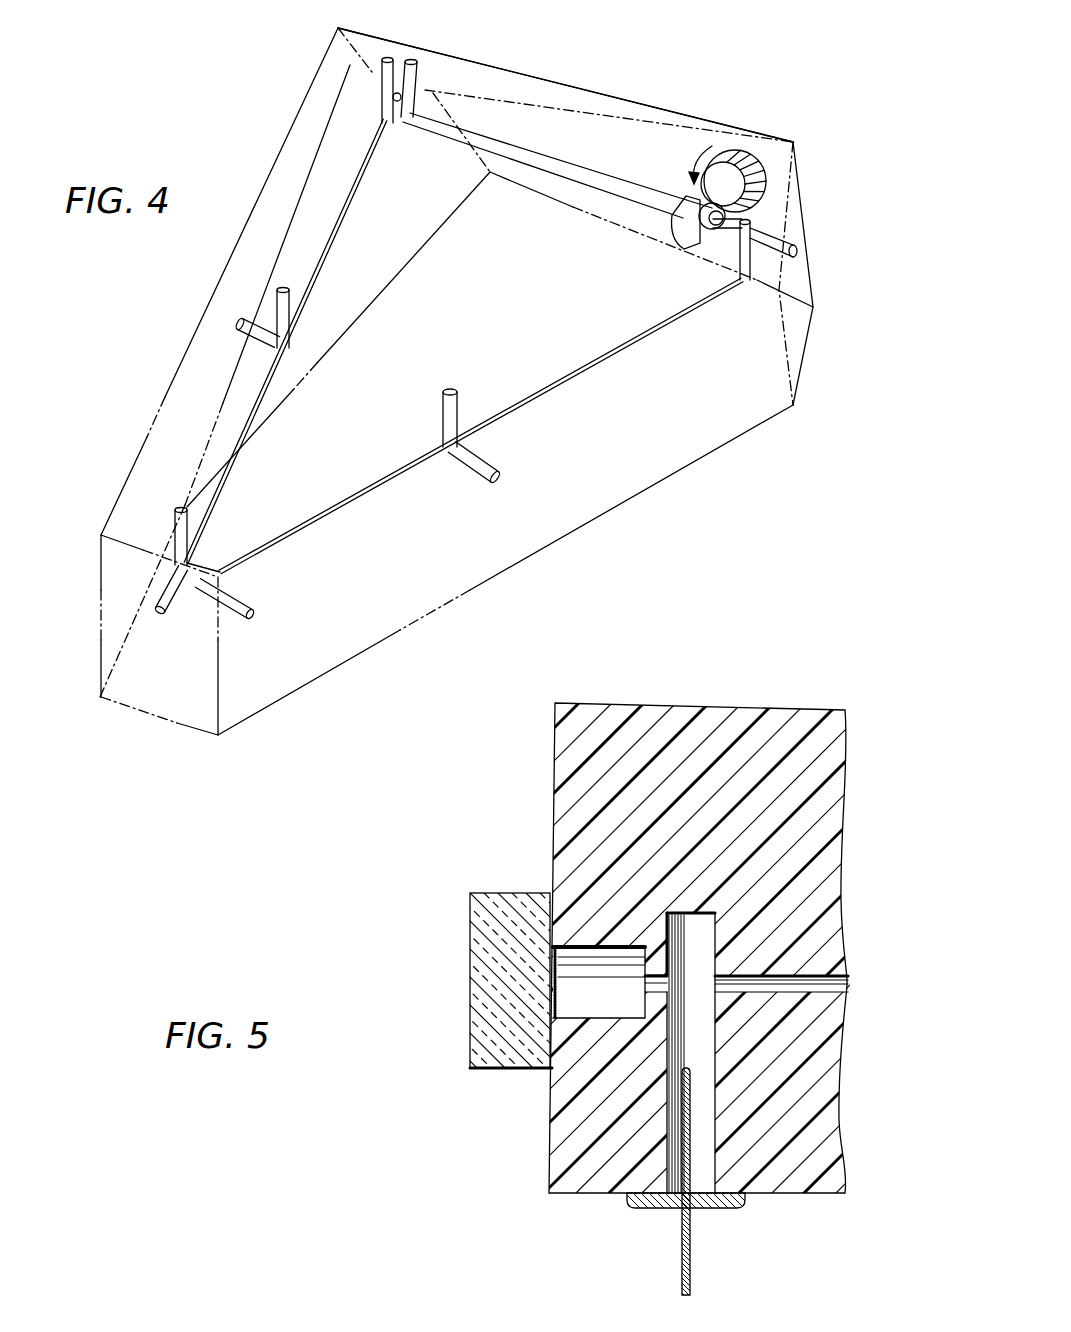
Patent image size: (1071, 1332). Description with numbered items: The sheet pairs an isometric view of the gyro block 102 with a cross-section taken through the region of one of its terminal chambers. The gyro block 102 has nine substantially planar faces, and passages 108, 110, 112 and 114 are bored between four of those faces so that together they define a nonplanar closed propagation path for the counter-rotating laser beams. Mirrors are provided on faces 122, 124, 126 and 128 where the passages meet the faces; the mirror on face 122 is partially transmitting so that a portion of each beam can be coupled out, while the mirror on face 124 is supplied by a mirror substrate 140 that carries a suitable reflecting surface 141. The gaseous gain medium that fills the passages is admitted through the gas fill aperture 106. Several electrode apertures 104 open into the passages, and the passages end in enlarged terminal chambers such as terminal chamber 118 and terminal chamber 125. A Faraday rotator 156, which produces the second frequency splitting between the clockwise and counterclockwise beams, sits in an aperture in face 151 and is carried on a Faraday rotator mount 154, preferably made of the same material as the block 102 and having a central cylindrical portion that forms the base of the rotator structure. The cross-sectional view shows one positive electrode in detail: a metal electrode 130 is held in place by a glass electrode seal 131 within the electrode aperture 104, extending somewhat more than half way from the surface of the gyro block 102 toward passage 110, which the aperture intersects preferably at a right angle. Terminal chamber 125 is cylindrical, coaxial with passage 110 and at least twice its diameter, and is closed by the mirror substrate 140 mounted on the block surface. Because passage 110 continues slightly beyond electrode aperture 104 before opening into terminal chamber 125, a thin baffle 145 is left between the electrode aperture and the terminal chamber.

In FIG. 4, the gyro block 102 is at (484, 396).
In FIG. 5, the gyro block 102 is at (547, 971).
In FIG. 4, the electrode aperture 104 is at (173, 530).
In FIG. 5, the electrode aperture 104 is at (703, 1118).
In FIG. 4, the gas fill aperture 106 is at (497, 478).
In FIG. 4, the passage 108 is at (227, 473).
In FIG. 4, the passage 110 is at (340, 512).
In FIG. 5, the passage 110 is at (812, 995).
In FIG. 4, the passage 112 is at (547, 170).
In FIG. 4, the passage 114 is at (417, 88).
In FIG. 4, the terminal chamber 118 is at (180, 600).
In FIG. 4, the face 122 is at (125, 680).
In FIG. 4, the face 124 is at (797, 350).
In FIG. 4, the terminal chamber 125 is at (790, 260).
In FIG. 5, the terminal chamber 125 is at (617, 970).
In FIG. 4, the face 126 is at (513, 88).
In FIG. 4, the face 128 is at (327, 160).
In FIG. 5, the metal electrode 130 is at (688, 1218).
In FIG. 5, the glass electrode seal 131 is at (633, 1202).
In FIG. 5, the mirror substrate 140 is at (497, 950).
In FIG. 5, the reflecting surface 141 is at (562, 985).
In FIG. 5, the baffle 145 is at (667, 952).
In FIG. 4, the face 151 is at (653, 140).
In FIG. 4, the Faraday rotator mount 154 is at (755, 172).
In FIG. 4, the Faraday rotator 156 is at (710, 143).